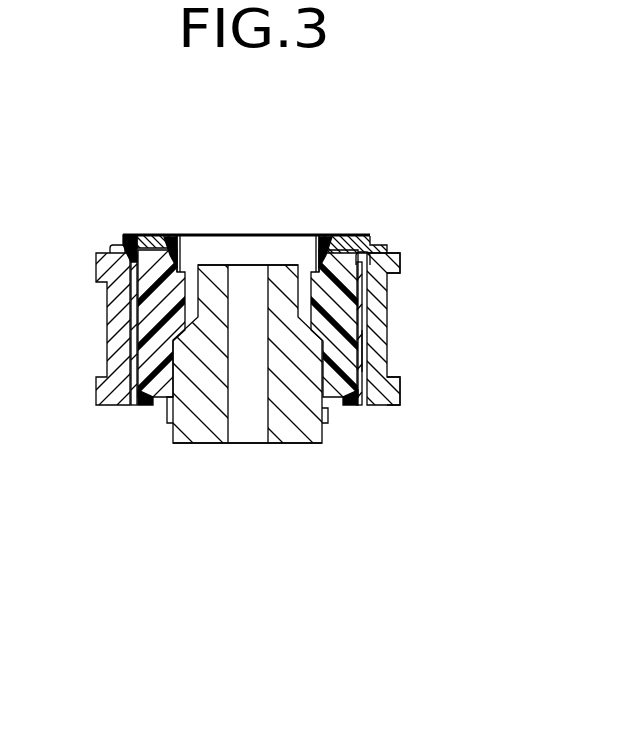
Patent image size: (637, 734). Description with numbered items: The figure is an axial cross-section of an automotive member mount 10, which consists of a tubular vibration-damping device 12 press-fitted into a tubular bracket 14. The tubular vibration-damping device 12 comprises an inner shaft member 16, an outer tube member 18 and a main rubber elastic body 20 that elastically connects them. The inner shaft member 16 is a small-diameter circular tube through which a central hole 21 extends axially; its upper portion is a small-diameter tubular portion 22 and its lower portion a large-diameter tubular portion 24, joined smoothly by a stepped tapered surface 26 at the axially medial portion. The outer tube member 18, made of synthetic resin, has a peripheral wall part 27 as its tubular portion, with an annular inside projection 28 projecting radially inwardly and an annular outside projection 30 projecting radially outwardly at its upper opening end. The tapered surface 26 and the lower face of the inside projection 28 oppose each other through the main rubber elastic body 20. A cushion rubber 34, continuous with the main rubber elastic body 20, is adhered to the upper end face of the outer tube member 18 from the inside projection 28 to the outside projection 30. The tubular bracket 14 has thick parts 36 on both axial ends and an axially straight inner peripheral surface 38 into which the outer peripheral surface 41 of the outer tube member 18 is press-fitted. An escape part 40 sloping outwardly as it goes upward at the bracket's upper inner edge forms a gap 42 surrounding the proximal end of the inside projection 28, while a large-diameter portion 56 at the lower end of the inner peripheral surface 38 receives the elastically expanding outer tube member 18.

The member mount 10 is at (318, 350).
The tubular vibration-damping device 12 is at (383, 225).
The tubular bracket 14 is at (392, 333).
The inner shaft member 16 is at (170, 438).
The outer tube member 18 is at (127, 349).
The main rubber elastic body 20 is at (152, 401).
The central hole 21 is at (228, 407).
The small-diameter tubular portion 22 is at (282, 270).
The large-diameter tubular portion 24 is at (295, 428).
The stepped tapered surface 26 is at (185, 318).
The peripheral wall part 27 is at (360, 350).
The inside projection 28 is at (335, 257).
The outside projection 30 is at (120, 249).
The cushion rubber 34 is at (155, 238).
The thick part 36 is at (393, 263).
The inner peripheral surface 38 is at (358, 309).
The escape part 40 is at (363, 260).
The outer peripheral surface 41 is at (130, 313).
The gap 42 is at (126, 260).
The large-diameter portion 56 is at (368, 392).